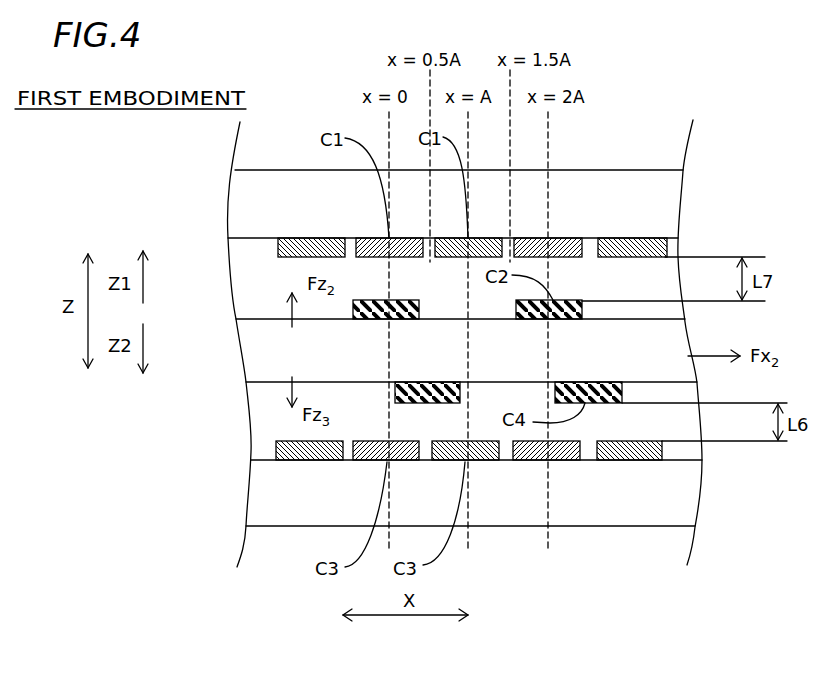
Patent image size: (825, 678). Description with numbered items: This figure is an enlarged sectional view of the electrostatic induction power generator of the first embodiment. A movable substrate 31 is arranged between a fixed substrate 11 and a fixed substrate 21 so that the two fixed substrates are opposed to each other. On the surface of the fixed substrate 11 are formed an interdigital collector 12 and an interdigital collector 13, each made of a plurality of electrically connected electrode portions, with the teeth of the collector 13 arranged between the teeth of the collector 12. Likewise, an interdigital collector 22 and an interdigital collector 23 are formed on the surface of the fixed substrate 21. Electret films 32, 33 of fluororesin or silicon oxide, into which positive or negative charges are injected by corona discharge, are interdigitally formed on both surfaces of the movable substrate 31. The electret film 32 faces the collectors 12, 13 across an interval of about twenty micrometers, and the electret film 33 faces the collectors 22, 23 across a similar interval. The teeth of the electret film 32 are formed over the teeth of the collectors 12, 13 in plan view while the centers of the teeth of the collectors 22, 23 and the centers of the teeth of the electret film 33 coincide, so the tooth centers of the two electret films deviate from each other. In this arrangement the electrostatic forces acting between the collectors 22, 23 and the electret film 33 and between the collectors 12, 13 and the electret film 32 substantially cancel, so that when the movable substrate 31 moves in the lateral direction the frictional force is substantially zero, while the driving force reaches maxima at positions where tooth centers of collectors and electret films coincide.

The fixed substrate 11 is at (675, 514).
The collector 12 is at (563, 462).
The collector 13 is at (627, 462).
The fixed substrate 21 is at (663, 183).
The collector 22 is at (573, 239).
The collector 23 is at (638, 247).
The movable substrate 31 is at (270, 351).
The electret film 32 is at (575, 392).
The electret film 33 is at (557, 312).